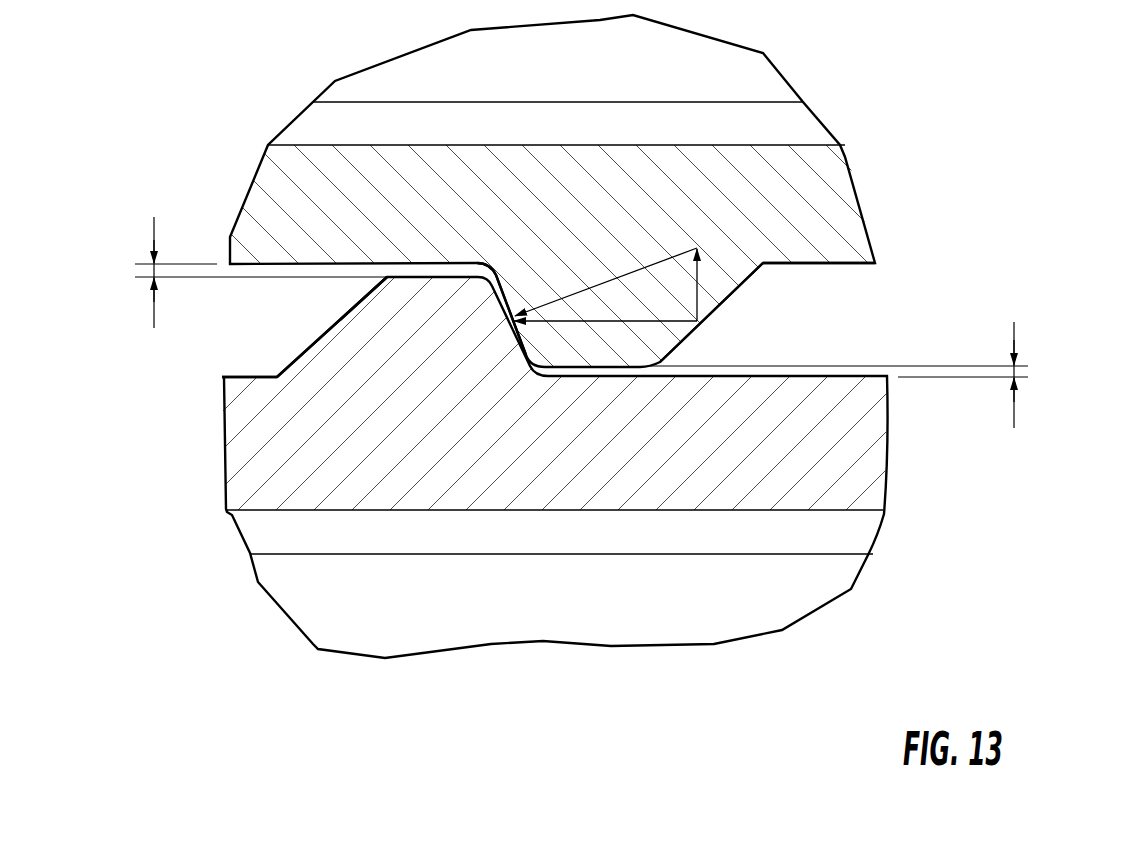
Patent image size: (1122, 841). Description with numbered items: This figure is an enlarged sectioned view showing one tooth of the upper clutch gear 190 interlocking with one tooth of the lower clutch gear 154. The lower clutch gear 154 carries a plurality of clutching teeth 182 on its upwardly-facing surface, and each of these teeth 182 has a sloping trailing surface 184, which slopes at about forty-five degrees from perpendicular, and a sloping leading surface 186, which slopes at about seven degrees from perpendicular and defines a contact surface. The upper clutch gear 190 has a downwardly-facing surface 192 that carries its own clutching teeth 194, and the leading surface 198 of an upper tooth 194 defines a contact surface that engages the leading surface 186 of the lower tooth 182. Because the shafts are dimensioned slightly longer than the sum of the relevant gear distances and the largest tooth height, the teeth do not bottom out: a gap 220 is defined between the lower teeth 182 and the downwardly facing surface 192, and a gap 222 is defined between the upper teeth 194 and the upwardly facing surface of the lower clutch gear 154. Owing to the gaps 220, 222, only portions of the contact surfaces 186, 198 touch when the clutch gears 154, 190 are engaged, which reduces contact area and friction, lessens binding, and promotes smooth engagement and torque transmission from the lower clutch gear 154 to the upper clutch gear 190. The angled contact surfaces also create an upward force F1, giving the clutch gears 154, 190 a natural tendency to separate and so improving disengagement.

The lower clutch gear 154 is at (223, 490).
The clutching teeth 182 is at (327, 329).
The sloping trailing surface 184 is at (353, 308).
The sloping leading surface 186 is at (714, 196).
The sloping leading surface 198 is at (506, 290).
The upper clutch gear 190 is at (256, 170).
The downwardly-facing surface 192 is at (843, 267).
The clutching teeth 194 is at (691, 336).
The gap 220 is at (151, 271).
The gap 222 is at (1019, 372).
The upward force F1 is at (701, 303).